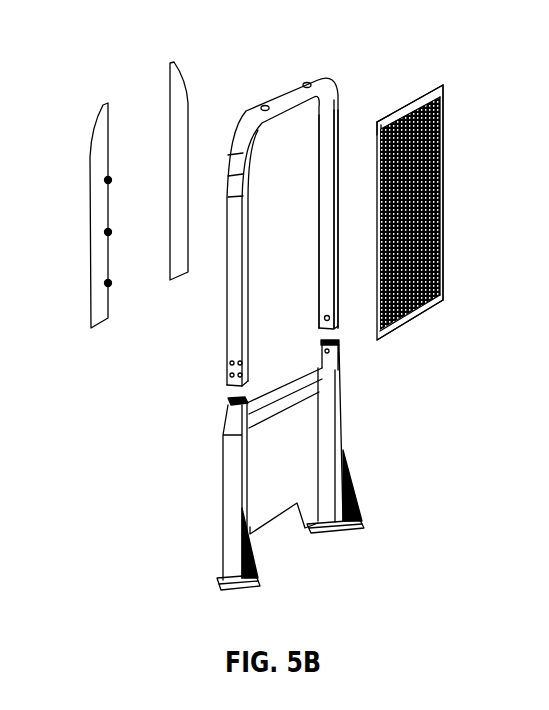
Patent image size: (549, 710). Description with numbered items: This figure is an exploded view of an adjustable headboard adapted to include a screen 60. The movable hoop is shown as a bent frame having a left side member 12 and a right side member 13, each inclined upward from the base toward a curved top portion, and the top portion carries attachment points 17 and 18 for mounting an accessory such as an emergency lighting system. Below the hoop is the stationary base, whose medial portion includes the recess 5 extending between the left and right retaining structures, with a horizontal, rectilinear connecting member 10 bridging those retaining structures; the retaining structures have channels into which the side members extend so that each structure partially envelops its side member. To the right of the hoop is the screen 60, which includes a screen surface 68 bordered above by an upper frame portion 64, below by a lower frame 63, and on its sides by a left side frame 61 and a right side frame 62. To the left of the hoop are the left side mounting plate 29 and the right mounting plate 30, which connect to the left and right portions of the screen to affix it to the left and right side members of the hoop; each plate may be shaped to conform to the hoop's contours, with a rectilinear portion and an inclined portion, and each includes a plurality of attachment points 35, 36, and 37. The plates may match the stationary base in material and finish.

The recess 5 is at (283, 510).
The connecting member 10 is at (314, 465).
The left side member 12 is at (254, 201).
The right side member 13 is at (318, 210).
The attachment point 17 is at (266, 106).
The attachment point 18 is at (307, 83).
The left side mounting plate 29 is at (91, 215).
The right mounting plate 30 is at (174, 62).
The attachment point 35 is at (109, 283).
The attachment point 36 is at (109, 232).
The attachment point 37 is at (109, 180).
The screen 60 is at (428, 204).
The left side frame 61 is at (375, 130).
The right side frame 62 is at (444, 140).
The lower frame 63 is at (424, 308).
The upper frame portion 64 is at (433, 85).
The screen surface 68 is at (444, 254).